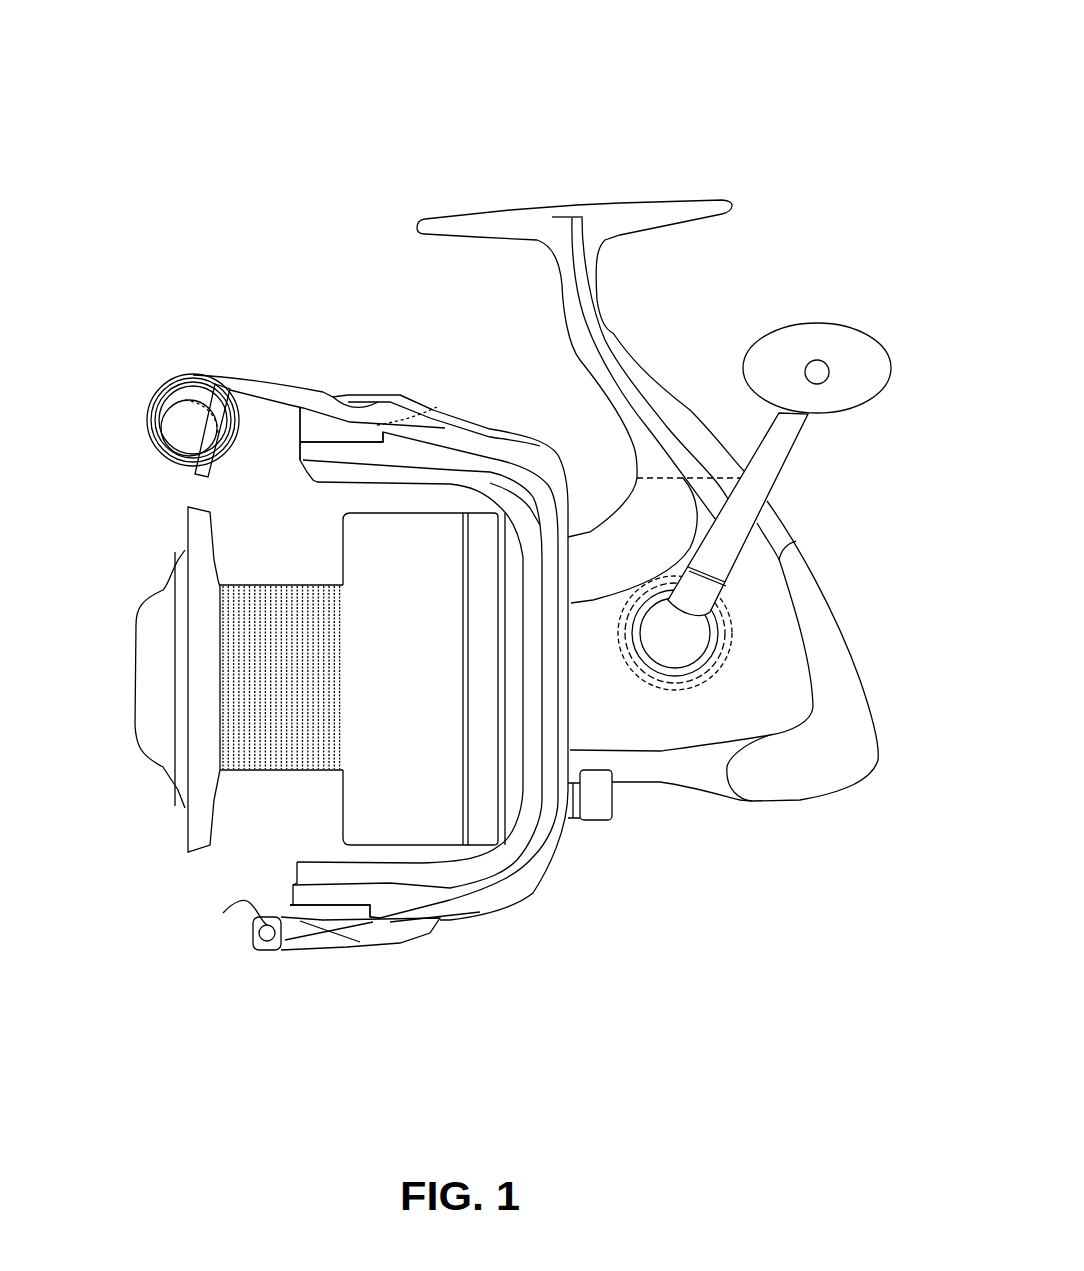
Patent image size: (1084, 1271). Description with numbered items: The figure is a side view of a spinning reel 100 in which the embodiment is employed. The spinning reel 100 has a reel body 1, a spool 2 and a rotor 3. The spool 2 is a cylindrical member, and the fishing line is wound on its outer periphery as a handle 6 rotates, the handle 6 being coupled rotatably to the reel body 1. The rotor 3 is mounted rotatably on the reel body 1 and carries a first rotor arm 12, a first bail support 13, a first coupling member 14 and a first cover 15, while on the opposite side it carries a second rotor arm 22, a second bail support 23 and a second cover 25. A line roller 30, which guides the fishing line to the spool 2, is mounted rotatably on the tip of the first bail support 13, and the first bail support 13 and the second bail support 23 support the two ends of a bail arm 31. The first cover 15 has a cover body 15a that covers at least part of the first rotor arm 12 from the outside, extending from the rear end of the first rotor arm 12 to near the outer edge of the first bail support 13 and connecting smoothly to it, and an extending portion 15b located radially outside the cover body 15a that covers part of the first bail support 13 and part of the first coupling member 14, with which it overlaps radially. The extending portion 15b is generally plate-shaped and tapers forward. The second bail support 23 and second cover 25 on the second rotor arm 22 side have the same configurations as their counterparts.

The spinning reel 100 is at (636, 140).
The reel body 1 is at (660, 360).
The spool 2 is at (238, 790).
The rotor 3 is at (535, 894).
The handle 6 is at (823, 318).
The first rotor arm 12 is at (480, 458).
The first bail support 13 is at (272, 370).
The first coupling member 14 is at (337, 392).
The first cover 15 is at (395, 388).
The cover body 15a is at (541, 437).
The extending portion 15b is at (437, 408).
The second rotor arm 22 is at (392, 888).
The second bail support 23 is at (308, 954).
The second cover 25 is at (430, 947).
The line roller 30 is at (165, 378).
The bail arm 31 is at (170, 462).